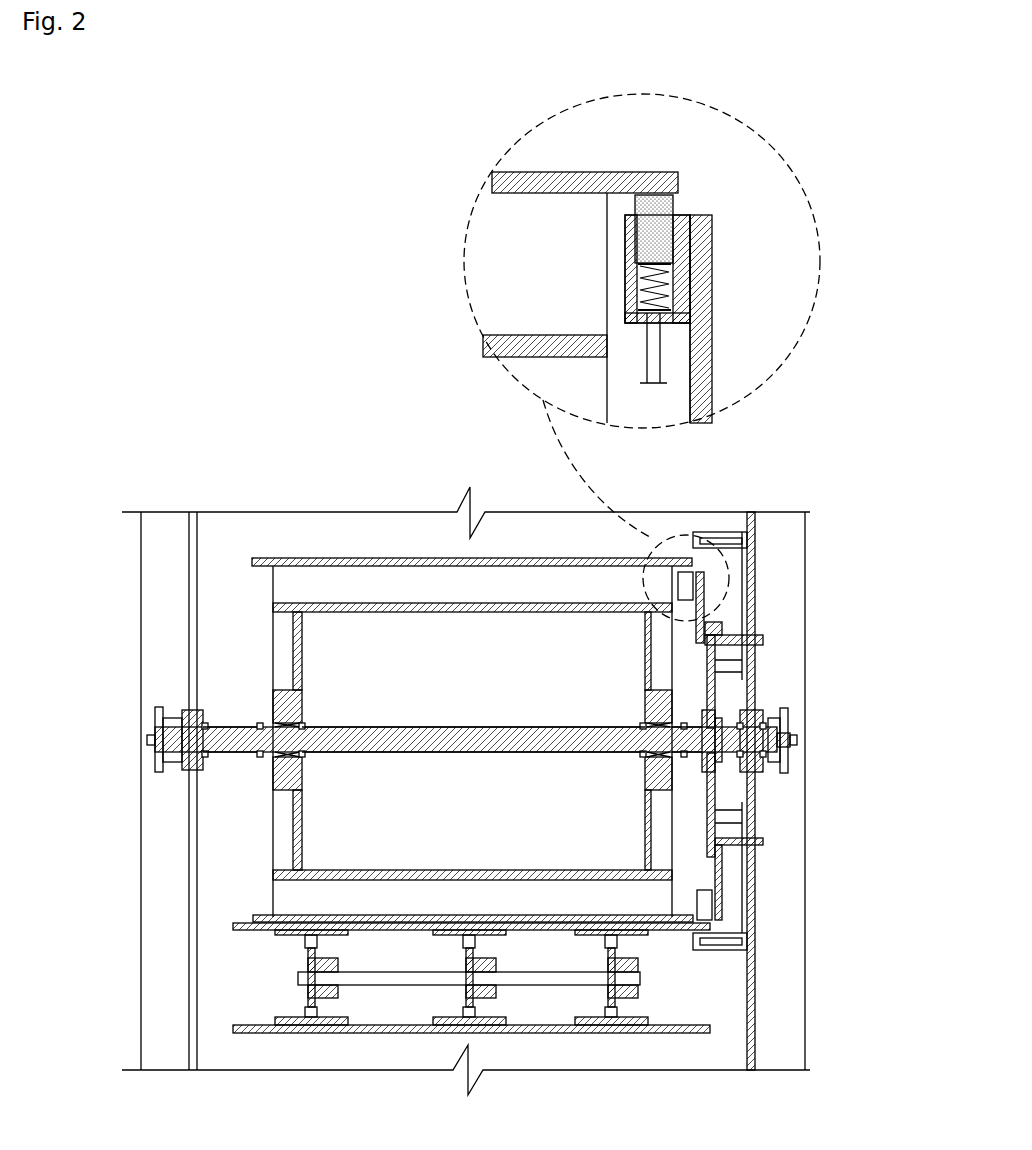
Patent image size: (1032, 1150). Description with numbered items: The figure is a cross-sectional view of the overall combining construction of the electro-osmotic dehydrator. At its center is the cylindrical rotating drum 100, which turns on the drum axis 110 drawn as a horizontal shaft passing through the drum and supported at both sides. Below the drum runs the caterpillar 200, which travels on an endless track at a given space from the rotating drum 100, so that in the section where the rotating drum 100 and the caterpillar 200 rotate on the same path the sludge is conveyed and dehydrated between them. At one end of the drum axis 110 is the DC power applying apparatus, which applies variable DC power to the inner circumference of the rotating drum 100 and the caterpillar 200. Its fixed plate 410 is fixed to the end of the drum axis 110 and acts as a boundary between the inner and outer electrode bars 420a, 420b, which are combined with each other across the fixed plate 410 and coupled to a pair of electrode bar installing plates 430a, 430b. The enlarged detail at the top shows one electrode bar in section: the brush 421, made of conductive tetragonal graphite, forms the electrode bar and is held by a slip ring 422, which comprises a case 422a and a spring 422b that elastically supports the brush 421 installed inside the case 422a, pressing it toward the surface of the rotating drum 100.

The rotating drum 100 is at (253, 917).
The drum axis 110 is at (428, 742).
The caterpillar 200 is at (233, 926).
The fixed plate 410 is at (715, 702).
The electrode bar 420a is at (705, 583).
The electrode bar 420b is at (705, 911).
The brush 421 is at (670, 223).
The slip ring 422 is at (712, 289).
The case 422a is at (633, 308).
The spring 422b is at (670, 295).
The electrode bar installing plate 430a is at (705, 610).
The electrode bar installing plate 430b is at (720, 875).